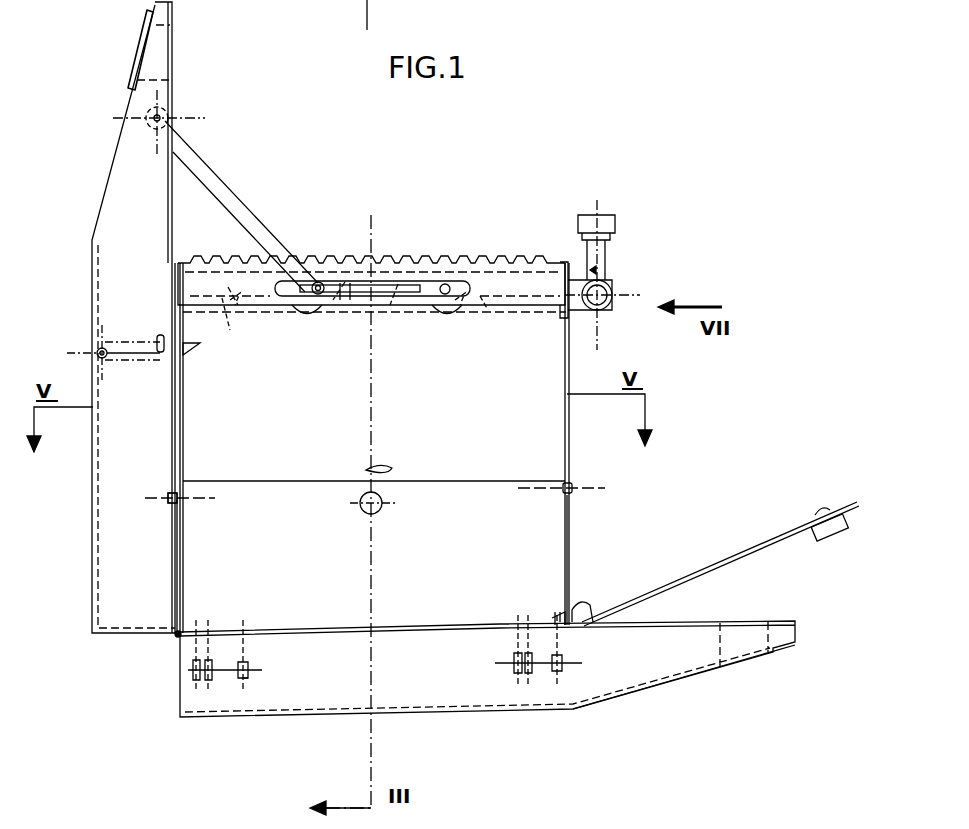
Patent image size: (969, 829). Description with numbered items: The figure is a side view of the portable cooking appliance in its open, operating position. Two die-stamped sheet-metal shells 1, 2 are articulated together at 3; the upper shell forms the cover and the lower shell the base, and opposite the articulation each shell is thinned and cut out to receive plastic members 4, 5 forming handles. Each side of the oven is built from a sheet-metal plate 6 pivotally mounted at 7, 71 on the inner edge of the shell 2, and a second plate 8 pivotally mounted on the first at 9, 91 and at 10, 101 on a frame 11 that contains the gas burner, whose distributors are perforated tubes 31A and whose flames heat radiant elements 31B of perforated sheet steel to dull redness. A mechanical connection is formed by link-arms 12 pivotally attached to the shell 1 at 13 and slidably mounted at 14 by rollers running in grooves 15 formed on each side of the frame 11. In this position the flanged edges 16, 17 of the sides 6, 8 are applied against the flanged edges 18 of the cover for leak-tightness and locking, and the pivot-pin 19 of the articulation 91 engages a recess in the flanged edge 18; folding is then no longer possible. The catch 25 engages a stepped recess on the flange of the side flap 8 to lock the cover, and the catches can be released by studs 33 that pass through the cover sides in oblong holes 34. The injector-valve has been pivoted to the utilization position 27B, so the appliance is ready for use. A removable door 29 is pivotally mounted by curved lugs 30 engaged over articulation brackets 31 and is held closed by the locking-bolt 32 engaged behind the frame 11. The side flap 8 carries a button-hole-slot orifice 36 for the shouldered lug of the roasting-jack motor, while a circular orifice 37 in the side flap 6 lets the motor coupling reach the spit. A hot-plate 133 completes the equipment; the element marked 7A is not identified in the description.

The shell 1 is at (140, 625).
The shell 2 is at (303, 712).
The articulation 3 is at (176, 635).
The handle member 4 is at (135, 48).
The handle member 5 is at (748, 655).
The sheet-metal plate 6 is at (564, 557).
The pivot 7 is at (512, 662).
The left mounting bolt 7A is at (232, 674).
The pivot 71 is at (258, 668).
The plate 8 is at (548, 430).
The pivot 9 is at (572, 489).
The articulation 91 is at (195, 494).
The articulation 10 is at (560, 313).
The articulation 101 is at (190, 308).
The frame 11 is at (558, 263).
The link-arm 12 is at (243, 213).
The pivot 13 is at (164, 118).
The sliding mount 14 is at (331, 282).
The groove 15 is at (412, 296).
The flanged edge 16 is at (184, 573).
The flanged edge 17 is at (183, 433).
The flanged edge 18 is at (178, 437).
The pivot-pin 19 is at (167, 502).
The catch 25 is at (214, 358).
The utilization position 27B is at (607, 304).
The removable door 29 is at (730, 560).
The curved lug 30 is at (580, 603).
The articulation bracket 31 is at (560, 632).
The perforated tube 31A is at (305, 318).
The radiant element 31B is at (490, 314).
The locking-bolt 32 is at (853, 502).
The stud 33 is at (160, 358).
The oblong hole 34 is at (157, 338).
The orifice 36 is at (394, 466).
The circular orifice 37 is at (378, 511).
The hot-plate 133 is at (462, 252).